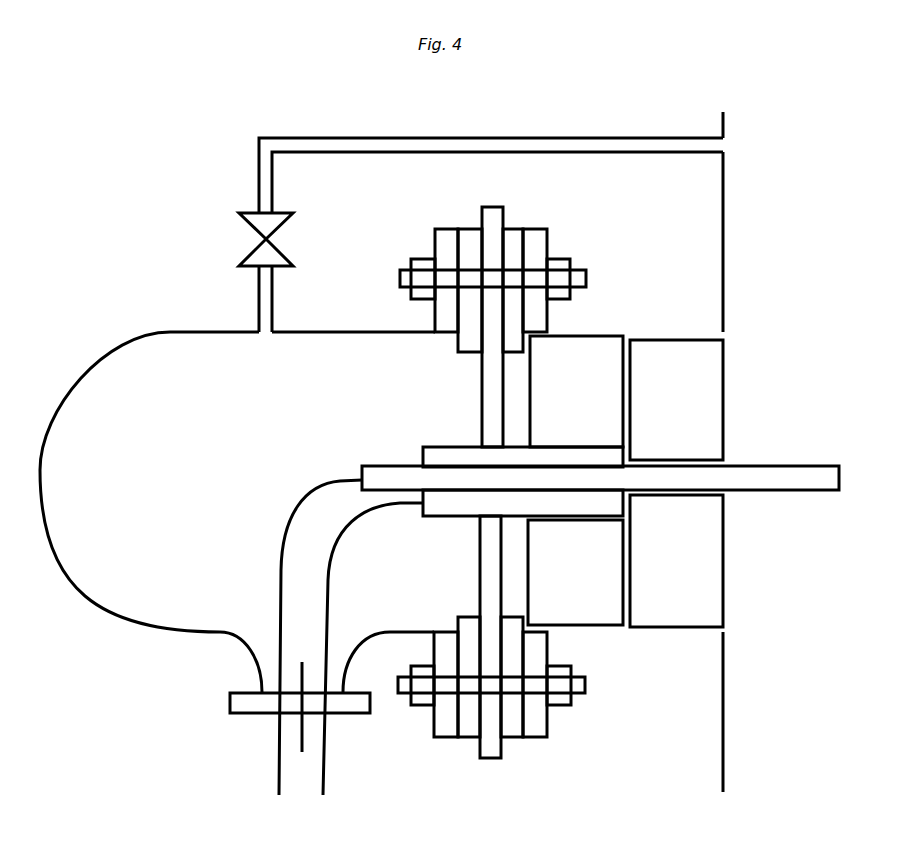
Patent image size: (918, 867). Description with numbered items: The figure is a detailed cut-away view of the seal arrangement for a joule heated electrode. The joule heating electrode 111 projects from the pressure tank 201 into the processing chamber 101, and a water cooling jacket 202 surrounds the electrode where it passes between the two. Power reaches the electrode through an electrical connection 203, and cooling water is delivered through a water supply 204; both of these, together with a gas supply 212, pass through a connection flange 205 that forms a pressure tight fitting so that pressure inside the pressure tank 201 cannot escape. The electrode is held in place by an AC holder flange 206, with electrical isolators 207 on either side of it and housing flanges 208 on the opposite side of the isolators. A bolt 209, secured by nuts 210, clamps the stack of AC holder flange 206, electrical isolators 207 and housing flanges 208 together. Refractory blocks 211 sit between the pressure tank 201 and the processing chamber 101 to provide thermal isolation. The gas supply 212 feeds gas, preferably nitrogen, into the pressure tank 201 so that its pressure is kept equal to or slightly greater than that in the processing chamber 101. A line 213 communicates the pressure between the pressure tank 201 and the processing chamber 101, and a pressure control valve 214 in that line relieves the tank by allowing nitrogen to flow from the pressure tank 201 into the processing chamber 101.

The processing chamber 101 is at (763, 452).
The joule heating electrode 111 is at (600, 478).
The pressure tank 201 is at (237, 512).
The water cooling jacket 202 is at (523, 481).
The electrical connection 203 is at (311, 653).
The water supply 204 is at (368, 665).
The connection flange 205 is at (258, 704).
The AC holder flange 206 is at (480, 215).
The electrical isolators 207 is at (513, 245).
The housing flanges 208 is at (447, 248).
The bolt 209 is at (588, 278).
The nuts 210 is at (425, 292).
The refractory blocks 211 is at (625, 481).
The gas supply 212 is at (300, 721).
The line 213 is at (261, 147).
The pressure control valve 214 is at (253, 239).